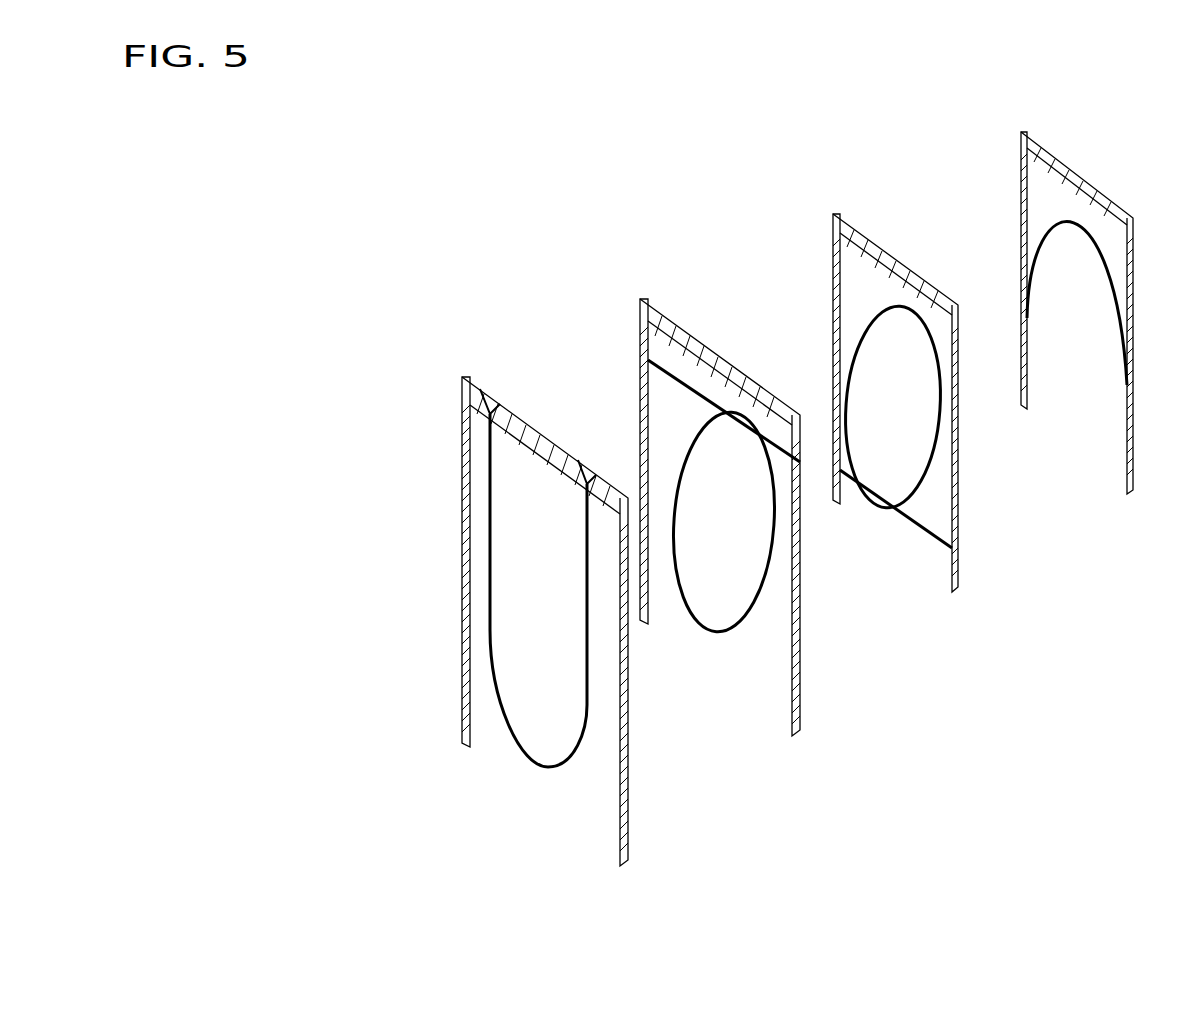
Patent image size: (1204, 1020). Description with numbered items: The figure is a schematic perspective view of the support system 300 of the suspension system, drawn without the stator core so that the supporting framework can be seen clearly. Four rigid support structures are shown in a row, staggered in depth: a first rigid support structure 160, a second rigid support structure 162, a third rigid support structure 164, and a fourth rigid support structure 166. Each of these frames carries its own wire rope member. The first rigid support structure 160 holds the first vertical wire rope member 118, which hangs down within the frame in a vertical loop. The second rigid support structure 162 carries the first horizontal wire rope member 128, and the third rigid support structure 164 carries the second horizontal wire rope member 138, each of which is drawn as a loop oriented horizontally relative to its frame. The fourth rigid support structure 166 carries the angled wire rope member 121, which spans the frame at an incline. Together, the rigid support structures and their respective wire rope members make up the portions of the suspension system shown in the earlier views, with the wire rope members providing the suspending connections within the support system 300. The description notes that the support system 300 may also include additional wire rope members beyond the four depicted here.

The support system 300 is at (361, 375).
The first rigid support structure 160 is at (526, 375).
The second rigid support structure 162 is at (716, 295).
The third rigid support structure 164 is at (910, 218).
The fourth rigid support structure 166 is at (1096, 134).
The first vertical wire rope member 118 is at (529, 762).
The first horizontal wire rope member 128 is at (723, 636).
The second horizontal wire rope member 138 is at (902, 515).
The angled wire rope member 121 is at (1118, 325).